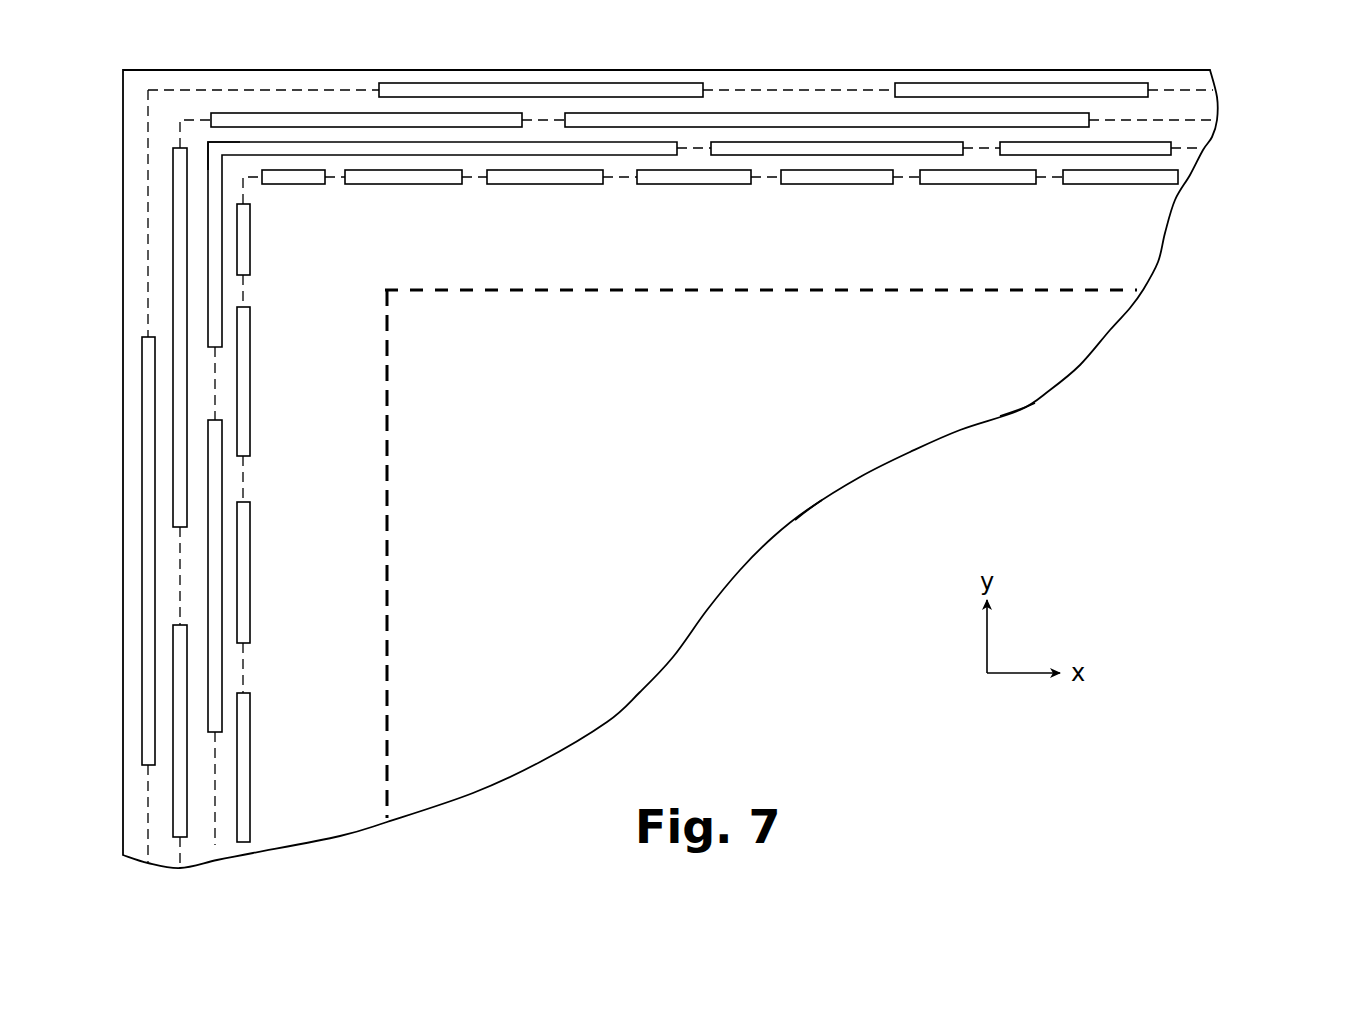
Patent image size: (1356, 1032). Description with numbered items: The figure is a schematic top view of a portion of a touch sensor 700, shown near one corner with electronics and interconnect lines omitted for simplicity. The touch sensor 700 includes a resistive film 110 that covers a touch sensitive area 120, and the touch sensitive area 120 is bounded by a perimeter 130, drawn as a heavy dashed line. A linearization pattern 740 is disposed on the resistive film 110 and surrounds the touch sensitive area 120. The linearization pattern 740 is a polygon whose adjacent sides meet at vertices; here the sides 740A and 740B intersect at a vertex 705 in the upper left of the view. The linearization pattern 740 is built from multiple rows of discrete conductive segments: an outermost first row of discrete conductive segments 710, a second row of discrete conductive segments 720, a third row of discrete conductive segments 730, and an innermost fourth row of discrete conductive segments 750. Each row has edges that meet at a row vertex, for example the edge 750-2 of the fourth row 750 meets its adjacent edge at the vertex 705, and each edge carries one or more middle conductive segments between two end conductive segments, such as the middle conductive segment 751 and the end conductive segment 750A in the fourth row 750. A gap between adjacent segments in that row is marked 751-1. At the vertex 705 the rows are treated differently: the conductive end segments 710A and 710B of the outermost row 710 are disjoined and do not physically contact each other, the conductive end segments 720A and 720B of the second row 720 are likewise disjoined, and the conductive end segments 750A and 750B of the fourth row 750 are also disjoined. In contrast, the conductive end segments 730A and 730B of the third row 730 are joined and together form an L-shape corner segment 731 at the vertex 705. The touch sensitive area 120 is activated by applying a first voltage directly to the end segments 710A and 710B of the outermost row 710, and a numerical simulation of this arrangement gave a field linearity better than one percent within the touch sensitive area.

The touch sensor 700 is at (1250, 99).
The vertex 705 is at (162, 105).
The first row of discrete conductive segments 710 is at (148, 830).
The conductive end segment 710A is at (495, 90).
The conductive end segment 710B is at (148, 381).
The second row of discrete conductive segments 720 is at (180, 850).
The conductive end segment 720A is at (262, 118).
The conductive end segment 720B is at (182, 197).
The third row of discrete conductive segments 730 is at (215, 843).
The conductive end segment 730A is at (320, 150).
The conductive end segment 730B is at (215, 292).
The L-shape corner segment 731 is at (210, 148).
The linearization pattern 740 is at (160, 664).
The side of linearization pattern 740A is at (768, 100).
The side of linearization pattern 740B is at (160, 730).
The fourth row of discrete conductive segments 750 is at (243, 845).
The end conductive segment 750A is at (265, 180).
The conductive end segment 750B is at (245, 255).
The edge of row 750-2 is at (243, 675).
The middle conductive segment 751 is at (695, 178).
The gap between conductive segments 751-1 is at (1048, 183).
The perimeter 130 is at (1085, 295).
The resistive film 110 is at (1017, 411).
The touch sensitive area 120 is at (809, 513).